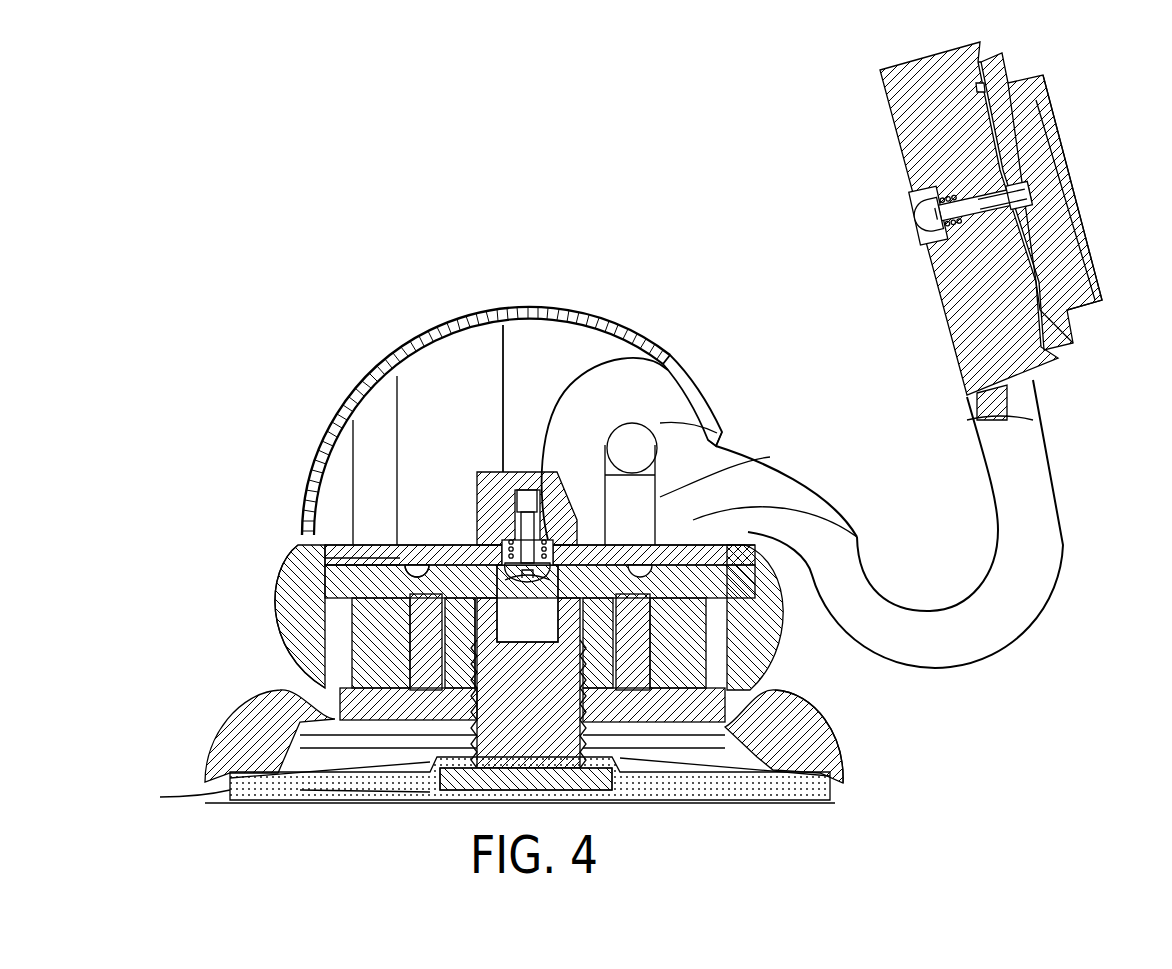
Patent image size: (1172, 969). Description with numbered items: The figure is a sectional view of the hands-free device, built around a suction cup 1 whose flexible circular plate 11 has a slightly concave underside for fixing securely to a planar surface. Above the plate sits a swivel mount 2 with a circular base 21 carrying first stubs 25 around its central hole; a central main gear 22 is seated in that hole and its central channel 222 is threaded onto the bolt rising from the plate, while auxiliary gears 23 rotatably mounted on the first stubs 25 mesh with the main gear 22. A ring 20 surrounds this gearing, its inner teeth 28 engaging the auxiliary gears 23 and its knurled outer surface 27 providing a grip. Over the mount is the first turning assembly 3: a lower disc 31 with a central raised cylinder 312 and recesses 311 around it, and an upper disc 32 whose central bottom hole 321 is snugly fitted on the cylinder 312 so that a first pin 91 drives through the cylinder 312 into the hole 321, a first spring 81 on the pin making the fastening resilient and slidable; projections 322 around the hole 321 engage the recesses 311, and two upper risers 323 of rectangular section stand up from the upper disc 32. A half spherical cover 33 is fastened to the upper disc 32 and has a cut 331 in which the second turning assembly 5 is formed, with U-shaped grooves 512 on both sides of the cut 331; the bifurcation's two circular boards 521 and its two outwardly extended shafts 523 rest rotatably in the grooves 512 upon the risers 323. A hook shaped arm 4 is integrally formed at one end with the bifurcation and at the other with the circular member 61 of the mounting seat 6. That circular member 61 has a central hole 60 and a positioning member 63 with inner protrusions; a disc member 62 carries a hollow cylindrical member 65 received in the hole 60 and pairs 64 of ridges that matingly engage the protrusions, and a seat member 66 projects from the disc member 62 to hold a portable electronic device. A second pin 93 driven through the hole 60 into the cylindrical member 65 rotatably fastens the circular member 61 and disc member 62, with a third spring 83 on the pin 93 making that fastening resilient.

The suction cup 1 is at (818, 802).
The flexible circular plate 11 is at (722, 800).
The swivel mount 2 is at (845, 768).
The circular base 21 is at (800, 705).
The central main gear 22 is at (600, 668).
The central channel 222 is at (440, 690).
The auxiliary gears 23 is at (400, 688).
The first stubs 25 is at (345, 664).
The inner teeth 28 is at (345, 622).
The ring 20 is at (300, 600).
The knurled outer surface 27 is at (298, 560).
The first turning assembly 3 is at (230, 463).
The lower disc 31 is at (330, 546).
The recesses 311 is at (725, 592).
The central raised cylinder 312 is at (417, 560).
The upper disc 32 is at (480, 540).
The central bottom hole 321 is at (500, 535).
The projections 322 is at (843, 513).
The upper risers 323 is at (770, 457).
The half spherical cover 33 is at (532, 304).
The cut 331 is at (650, 445).
The hook shaped arm 4 is at (1020, 600).
The second turning assembly 5 is at (708, 398).
The U-shaped grooves 512 is at (540, 500).
The circular boards 521 is at (668, 380).
The shafts 523 is at (712, 437).
The mounting seat 6 is at (979, 200).
The central hole 60 is at (968, 190).
The circular member 61 is at (896, 77).
The disc member 62 is at (1006, 58).
The positioning member 63 is at (980, 75).
The pairs of ridges 64 is at (950, 75).
The hollow cylindrical member 65 is at (1076, 245).
The seat member 66 is at (1048, 80).
The first spring 81 is at (505, 545).
The third spring 83 is at (918, 207).
The first pin 91 is at (527, 515).
The second pin 93 is at (1000, 207).